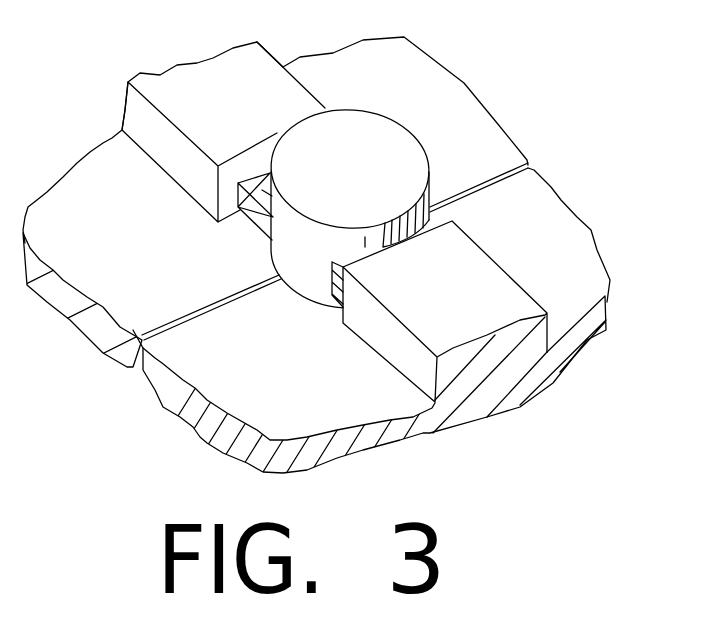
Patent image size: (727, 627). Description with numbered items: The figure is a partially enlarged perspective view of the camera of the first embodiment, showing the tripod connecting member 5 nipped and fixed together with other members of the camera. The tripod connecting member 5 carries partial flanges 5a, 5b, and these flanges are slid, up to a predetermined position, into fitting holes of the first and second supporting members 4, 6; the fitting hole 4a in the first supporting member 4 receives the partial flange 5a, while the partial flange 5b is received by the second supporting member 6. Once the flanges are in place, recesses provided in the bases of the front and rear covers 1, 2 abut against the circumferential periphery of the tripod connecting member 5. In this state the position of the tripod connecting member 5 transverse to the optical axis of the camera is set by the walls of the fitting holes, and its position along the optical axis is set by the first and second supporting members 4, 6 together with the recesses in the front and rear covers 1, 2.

The front cover 1 is at (421, 80).
The rear cover 2 is at (549, 218).
The first supporting member 4 is at (212, 75).
The fitting hole 4a is at (243, 195).
The tripod connecting member 5 is at (392, 167).
The partial flange 5a is at (263, 190).
The partial flange 5b is at (333, 293).
The second supporting member 6 is at (508, 303).